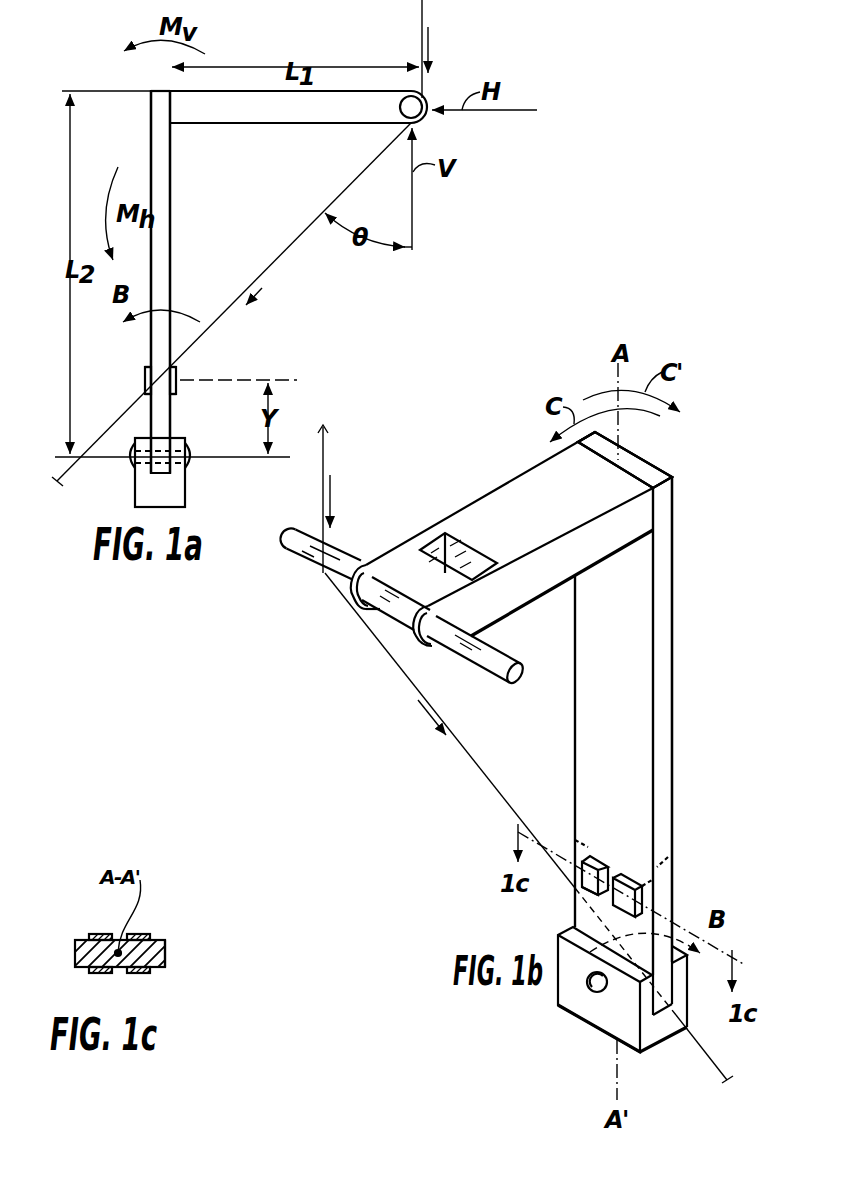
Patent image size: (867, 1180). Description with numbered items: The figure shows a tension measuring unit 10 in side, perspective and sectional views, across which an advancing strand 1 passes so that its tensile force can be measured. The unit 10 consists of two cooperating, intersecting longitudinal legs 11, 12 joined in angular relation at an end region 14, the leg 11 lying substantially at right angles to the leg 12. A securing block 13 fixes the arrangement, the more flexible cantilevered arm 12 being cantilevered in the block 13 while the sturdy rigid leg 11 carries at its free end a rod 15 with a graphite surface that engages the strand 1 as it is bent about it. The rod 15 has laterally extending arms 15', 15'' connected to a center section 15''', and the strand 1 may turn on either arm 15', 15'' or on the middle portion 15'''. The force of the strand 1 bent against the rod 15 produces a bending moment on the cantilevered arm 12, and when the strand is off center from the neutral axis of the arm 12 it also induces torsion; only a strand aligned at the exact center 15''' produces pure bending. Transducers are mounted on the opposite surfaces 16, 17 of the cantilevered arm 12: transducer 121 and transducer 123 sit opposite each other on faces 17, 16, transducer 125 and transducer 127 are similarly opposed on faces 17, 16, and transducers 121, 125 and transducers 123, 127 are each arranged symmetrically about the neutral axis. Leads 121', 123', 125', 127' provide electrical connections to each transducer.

In FIG. 1A, the advancing strand 1 is at (422, 22).
In FIG. 1B, the advancing strand 1 is at (325, 462).
In FIG. 1A, the tension measuring unit 10 is at (147, 87).
In FIG. 1B, the tension measuring unit 10 is at (683, 461).
In FIG. 1A, the leg 11 is at (290, 120).
In FIG. 1B, the leg 11 is at (503, 508).
In FIG. 1A, the cantilevered arm 12 is at (165, 174).
In FIG. 1B, the cantilevered arm 12 is at (665, 575).
In FIG. 1C, the cantilevered arm 12 is at (168, 952).
In FIG. 1A, the securing block 13 is at (140, 494).
In FIG. 1B, the securing block 13 is at (587, 1018).
In FIG. 1A, the end region 14 is at (167, 84).
In FIG. 1B, the end region 14 is at (676, 477).
In FIG. 1A, the rod 15 is at (381, 130).
In FIG. 1B, the rod 15 is at (390, 560).
In FIG. 1B, the laterally extending arm 15' is at (315, 571).
In FIG. 1B, the laterally extending arm 15'' is at (476, 664).
In FIG. 1B, the center section 15''' is at (345, 637).
In FIG. 1A, the surface of cantilevered arm 16 is at (151, 142).
In FIG. 1B, the surface of cantilevered arm 16 is at (673, 612).
In FIG. 1C, the surface of cantilevered arm 16 is at (163, 940).
In FIG. 1A, the surface of cantilevered arm 17 is at (172, 142).
In FIG. 1B, the surface of cantilevered arm 17 is at (592, 613).
In FIG. 1C, the surface of cantilevered arm 17 is at (164, 966).
In FIG. 1A, the transducer 121 is at (209, 390).
In FIG. 1B, the transducer 121 is at (609, 855).
In FIG. 1C, the transducer 121 is at (77, 985).
In FIG. 1A, the lead 121' is at (213, 419).
In FIG. 1B, the lead 121' is at (555, 914).
In FIG. 1A, the transducer 123 is at (119, 380).
In FIG. 1C, the transducer 123 is at (87, 914).
In FIG. 1A, the lead 123' is at (115, 414).
In FIG. 1B, the lead 123' is at (550, 814).
In FIG. 1B, the transducer 125 is at (675, 895).
In FIG. 1C, the transducer 125 is at (120, 987).
In FIG. 1A, the lead 125' is at (217, 350).
In FIG. 1B, the lead 125' is at (688, 867).
In FIG. 1C, the transducer 127 is at (164, 914).
In FIG. 1A, the lead 127' is at (117, 350).
In FIG. 1B, the lead 127' is at (706, 829).